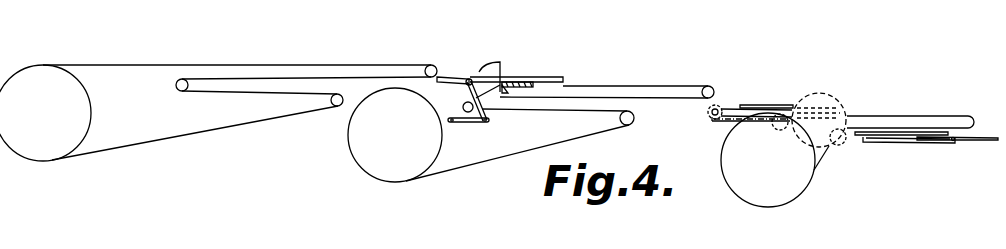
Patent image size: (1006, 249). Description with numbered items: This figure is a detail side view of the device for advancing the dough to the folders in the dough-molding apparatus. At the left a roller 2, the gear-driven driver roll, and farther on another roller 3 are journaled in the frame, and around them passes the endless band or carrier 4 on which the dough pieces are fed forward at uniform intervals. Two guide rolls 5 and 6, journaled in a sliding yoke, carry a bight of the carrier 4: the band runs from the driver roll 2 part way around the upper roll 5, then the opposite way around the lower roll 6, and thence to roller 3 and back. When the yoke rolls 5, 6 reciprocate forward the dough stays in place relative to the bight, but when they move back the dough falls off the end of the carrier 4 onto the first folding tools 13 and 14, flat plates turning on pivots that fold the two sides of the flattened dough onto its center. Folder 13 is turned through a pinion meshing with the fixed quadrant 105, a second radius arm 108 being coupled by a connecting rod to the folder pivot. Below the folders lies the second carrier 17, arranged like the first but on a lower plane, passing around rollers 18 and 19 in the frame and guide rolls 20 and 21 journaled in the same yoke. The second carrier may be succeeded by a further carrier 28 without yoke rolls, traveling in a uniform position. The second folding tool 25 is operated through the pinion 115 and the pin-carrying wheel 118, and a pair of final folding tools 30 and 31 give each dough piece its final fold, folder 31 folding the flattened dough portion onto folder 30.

The roller 2 is at (92, 113).
The endless band or carrier 4 is at (140, 70).
The guide roll 6 is at (180, 94).
The roller 3 is at (329, 100).
The guide roll 5 is at (433, 63).
The roller 18 is at (442, 149).
The roller 19 is at (621, 114).
The folding tool 13 is at (438, 85).
The guide roll 21 is at (464, 109).
The second radius arm 108 is at (476, 123).
The quadrant 105 is at (479, 72).
The folding tool 14 is at (549, 77).
The second carrier 17 is at (630, 85).
The guide roll 20 is at (714, 86).
The pinion 115 is at (708, 106).
The flat plate (folding tool) 25 is at (759, 104).
The wheel 118 is at (838, 96).
The carrier 28 is at (921, 115).
The final folding tool 30 is at (872, 140).
The final folding tool 31 is at (971, 141).